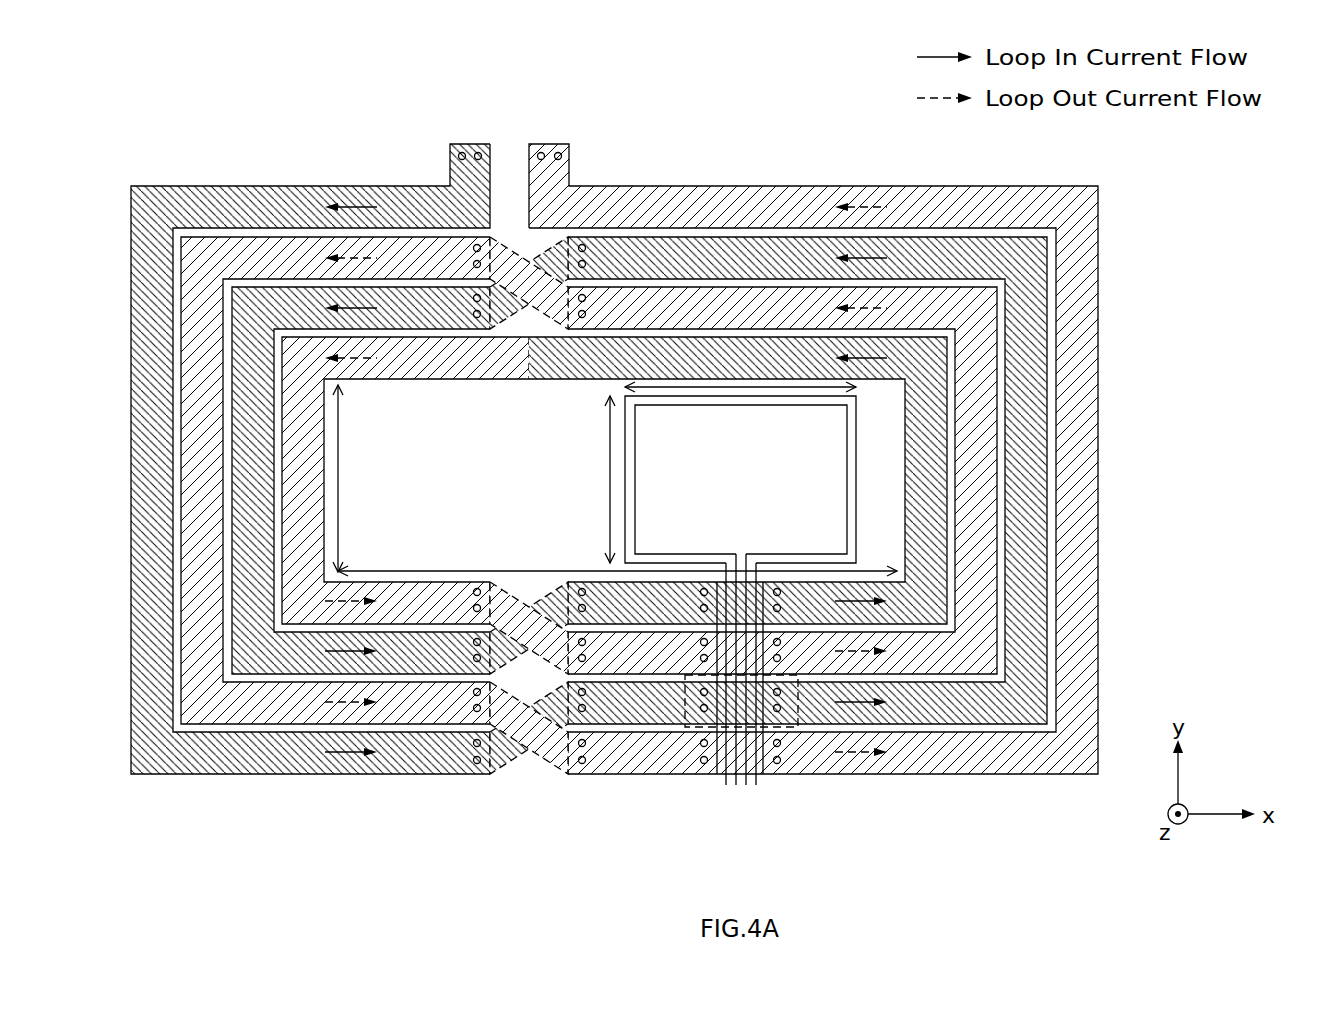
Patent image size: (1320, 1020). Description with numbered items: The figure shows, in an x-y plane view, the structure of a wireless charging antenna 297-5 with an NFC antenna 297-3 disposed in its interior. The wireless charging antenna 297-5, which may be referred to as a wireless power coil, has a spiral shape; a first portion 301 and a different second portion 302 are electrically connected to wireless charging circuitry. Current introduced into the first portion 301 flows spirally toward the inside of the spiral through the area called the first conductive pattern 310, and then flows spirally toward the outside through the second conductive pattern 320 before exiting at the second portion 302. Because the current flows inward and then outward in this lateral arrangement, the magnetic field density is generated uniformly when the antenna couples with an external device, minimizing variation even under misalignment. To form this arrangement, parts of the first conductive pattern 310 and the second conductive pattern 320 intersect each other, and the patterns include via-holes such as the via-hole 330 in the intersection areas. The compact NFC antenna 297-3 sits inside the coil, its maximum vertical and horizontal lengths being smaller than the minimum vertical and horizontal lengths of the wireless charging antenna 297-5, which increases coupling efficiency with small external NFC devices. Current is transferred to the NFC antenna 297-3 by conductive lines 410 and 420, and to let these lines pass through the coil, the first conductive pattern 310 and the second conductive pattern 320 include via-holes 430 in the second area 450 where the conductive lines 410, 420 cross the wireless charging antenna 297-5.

The wireless charging antenna 297-5 is at (651, 78).
The NFC antenna 297-3 is at (857, 480).
The first portion 301 is at (478, 148).
The second portion 302 is at (558, 148).
The first conductive pattern 310 is at (283, 185).
The second conductive pattern 320 is at (736, 185).
The via-hole 330 is at (477, 766).
The conductive line 410 is at (731, 802).
The conductive line 420 is at (751, 792).
The via-holes 430 is at (703, 714).
The second area 450 is at (778, 714).